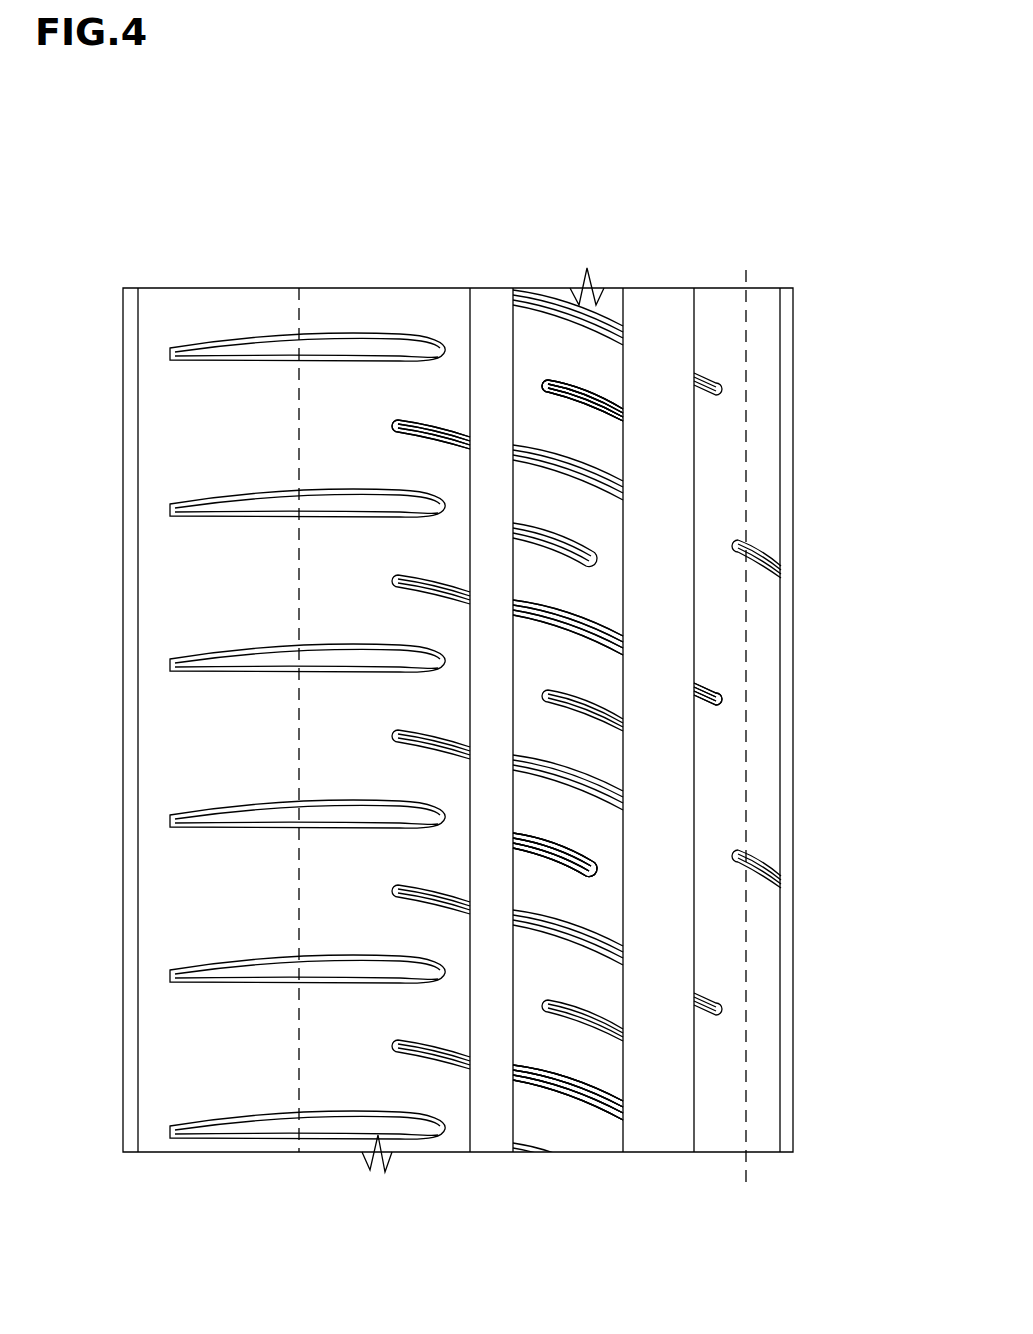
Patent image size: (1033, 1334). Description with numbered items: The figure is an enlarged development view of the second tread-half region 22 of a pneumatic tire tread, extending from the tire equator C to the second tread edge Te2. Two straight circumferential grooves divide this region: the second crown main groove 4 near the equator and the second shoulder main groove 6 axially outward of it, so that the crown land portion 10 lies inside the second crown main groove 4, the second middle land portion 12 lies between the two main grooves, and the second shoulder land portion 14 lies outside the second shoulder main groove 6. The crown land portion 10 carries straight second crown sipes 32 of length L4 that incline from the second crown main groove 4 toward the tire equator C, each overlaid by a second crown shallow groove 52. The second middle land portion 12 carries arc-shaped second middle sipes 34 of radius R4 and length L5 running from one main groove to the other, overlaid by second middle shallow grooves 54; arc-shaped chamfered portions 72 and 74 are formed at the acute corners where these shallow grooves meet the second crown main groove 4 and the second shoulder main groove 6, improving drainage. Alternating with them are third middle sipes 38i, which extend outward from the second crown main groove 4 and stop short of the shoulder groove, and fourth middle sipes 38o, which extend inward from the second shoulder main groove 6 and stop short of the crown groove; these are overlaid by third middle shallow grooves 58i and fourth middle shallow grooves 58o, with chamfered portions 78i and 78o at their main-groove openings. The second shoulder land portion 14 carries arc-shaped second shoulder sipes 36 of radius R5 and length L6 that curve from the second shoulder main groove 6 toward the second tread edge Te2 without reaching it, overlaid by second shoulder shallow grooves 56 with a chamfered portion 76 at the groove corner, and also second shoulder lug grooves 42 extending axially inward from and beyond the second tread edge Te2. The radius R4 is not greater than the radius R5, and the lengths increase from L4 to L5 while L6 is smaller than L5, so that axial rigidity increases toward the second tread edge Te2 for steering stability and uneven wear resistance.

The second tread-half region 22 is at (410, 195).
The second tread edge Te2 is at (299, 318).
The tire equator C is at (746, 285).
The second shoulder land portion 14 is at (392, 312).
The second shoulder lug grooves 42 is at (318, 655).
The second shoulder main groove 6 is at (488, 312).
The second crown main groove 4 is at (655, 318).
The crown land portion 10 is at (765, 318).
The second middle land portion 12 is at (560, 282).
The second middle sipes 34 is at (600, 620).
The second middle shallow grooves 54 is at (610, 655).
The chamfered portion 72 is at (620, 1108).
The chamfered portion 74 is at (512, 1080).
The third middle shallow grooves 58i is at (567, 387).
The third middle sipes 38i is at (585, 398).
The chamfered portion 78i is at (613, 410).
The chamfered portion 78o is at (500, 853).
The fourth middle sipes 38o is at (520, 840).
The fourth middle shallow grooves 58o is at (590, 867).
The second shoulder shallow grooves 56 is at (402, 420).
The chamfered portion 76 is at (472, 430).
The second shoulder sipes 36 is at (400, 432).
The second crown sipes 32 is at (708, 697).
The second crown shallow grooves 52 is at (705, 705).
The length of second shoulder sipes L6 is at (470, 560).
The length of second middle sipes L5 is at (623, 650).
The length of second crown sipes L4 is at (750, 688).
The radius of curvature of second shoulder sipes R5 is at (432, 588).
The radius of curvature of second middle sipes R4 is at (588, 630).